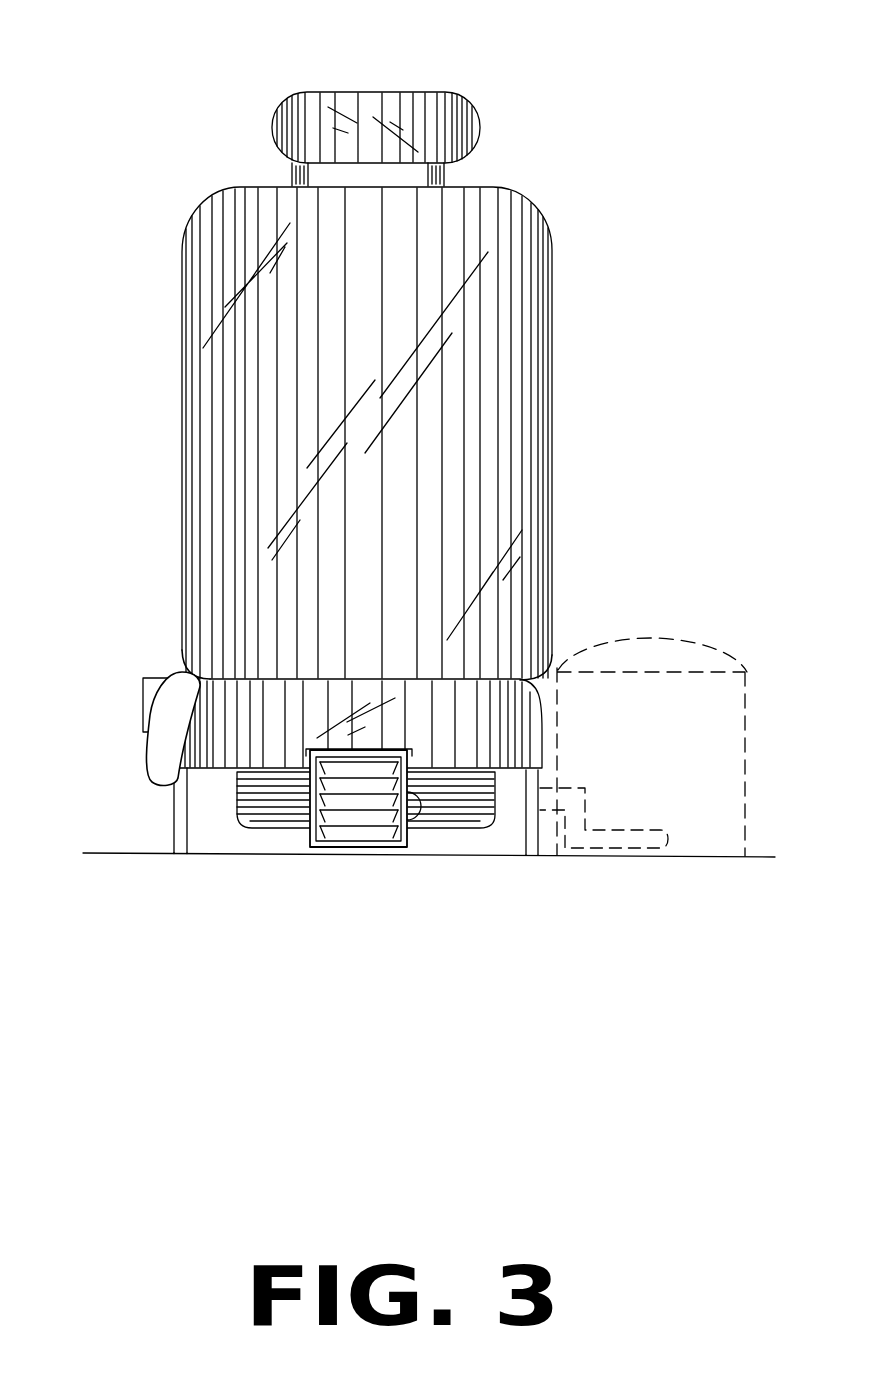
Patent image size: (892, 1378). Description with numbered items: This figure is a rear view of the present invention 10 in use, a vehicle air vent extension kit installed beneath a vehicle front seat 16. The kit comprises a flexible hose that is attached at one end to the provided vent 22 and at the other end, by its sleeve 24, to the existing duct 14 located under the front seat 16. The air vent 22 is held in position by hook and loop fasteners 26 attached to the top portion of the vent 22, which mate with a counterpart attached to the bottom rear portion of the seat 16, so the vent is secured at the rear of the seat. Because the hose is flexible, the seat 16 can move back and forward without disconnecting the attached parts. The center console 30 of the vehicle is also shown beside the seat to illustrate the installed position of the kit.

The present invention 10 is at (175, 872).
The existing duct 14 is at (507, 795).
The front seat 16 is at (375, 222).
The vent 22 is at (352, 835).
The sleeve 24 is at (472, 817).
The hook and loop fasteners 26 is at (343, 747).
The center console 30 is at (655, 767).